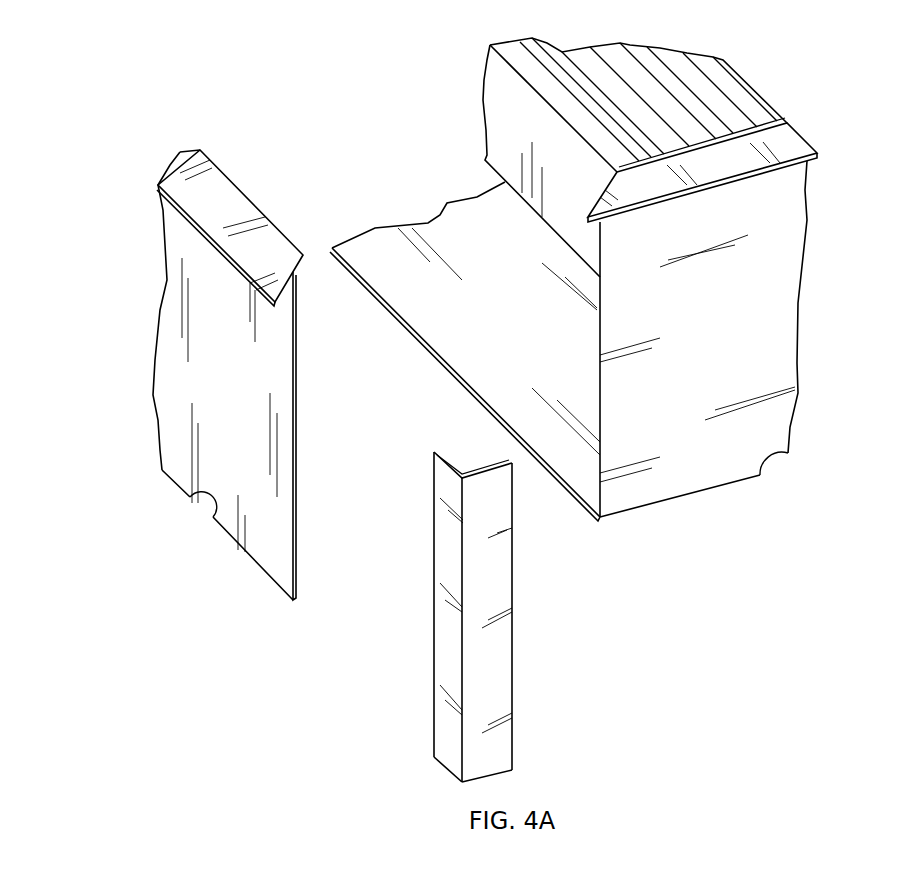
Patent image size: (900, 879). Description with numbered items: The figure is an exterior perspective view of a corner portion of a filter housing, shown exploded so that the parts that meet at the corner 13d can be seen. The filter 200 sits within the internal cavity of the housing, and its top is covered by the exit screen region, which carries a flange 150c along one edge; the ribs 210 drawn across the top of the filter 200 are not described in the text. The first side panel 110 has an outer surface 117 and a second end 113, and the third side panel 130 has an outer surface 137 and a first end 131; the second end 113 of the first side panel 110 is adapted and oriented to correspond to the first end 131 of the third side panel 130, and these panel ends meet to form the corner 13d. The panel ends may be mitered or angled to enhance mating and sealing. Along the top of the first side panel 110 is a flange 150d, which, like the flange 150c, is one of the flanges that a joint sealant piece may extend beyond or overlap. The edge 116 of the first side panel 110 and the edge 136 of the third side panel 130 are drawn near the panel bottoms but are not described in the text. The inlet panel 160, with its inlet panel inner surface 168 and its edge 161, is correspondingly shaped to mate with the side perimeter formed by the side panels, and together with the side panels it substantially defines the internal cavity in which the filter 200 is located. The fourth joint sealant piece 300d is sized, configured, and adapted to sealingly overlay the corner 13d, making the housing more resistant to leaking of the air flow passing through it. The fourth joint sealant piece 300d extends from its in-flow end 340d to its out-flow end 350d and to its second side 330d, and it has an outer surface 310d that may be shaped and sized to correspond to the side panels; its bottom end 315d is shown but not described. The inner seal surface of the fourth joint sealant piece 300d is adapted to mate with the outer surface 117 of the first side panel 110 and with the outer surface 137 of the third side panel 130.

The corner 13d is at (280, 712).
The first side panel 110 is at (236, 365).
The second end 113 is at (297, 457).
The notch 116 is at (188, 500).
The outer surface 117 is at (236, 396).
The flange 150d is at (223, 202).
The filter 200 is at (627, 147).
The ribs 210 is at (733, 95).
The flange 150c is at (782, 147).
The inlet panel 160 is at (465, 334).
The base plate edge 161 is at (402, 322).
The inlet panel inner surface 168 is at (533, 317).
The third side panel 130 is at (729, 349).
The first end 131 is at (595, 493).
The notch 136 is at (788, 453).
The outer surface 137 is at (718, 328).
The fourth joint sealant piece 300d is at (489, 593).
The outer surface 310d is at (482, 650).
The bracket bottom end 315d is at (458, 755).
The second side 330d is at (513, 680).
The in-flow end 340d is at (492, 780).
The out-flow end 350d is at (452, 460).